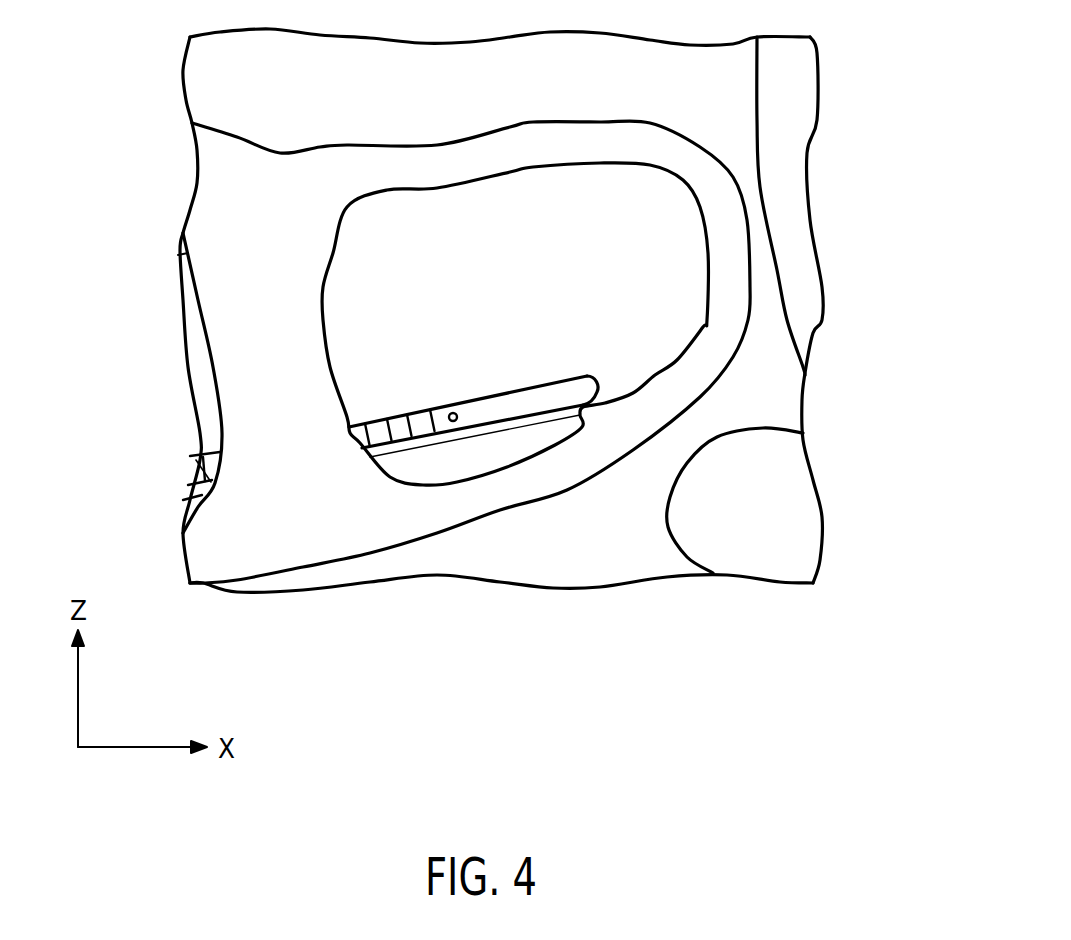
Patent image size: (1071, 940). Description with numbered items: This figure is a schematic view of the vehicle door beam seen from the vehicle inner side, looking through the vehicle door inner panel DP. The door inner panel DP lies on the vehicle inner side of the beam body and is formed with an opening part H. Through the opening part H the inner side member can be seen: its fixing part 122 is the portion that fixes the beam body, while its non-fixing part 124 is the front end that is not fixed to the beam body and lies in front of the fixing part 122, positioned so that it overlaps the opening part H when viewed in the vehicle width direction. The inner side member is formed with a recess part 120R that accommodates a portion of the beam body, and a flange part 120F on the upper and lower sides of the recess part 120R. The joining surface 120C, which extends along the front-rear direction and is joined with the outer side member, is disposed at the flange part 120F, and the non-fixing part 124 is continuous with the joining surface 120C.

The opening part H is at (650, 227).
The fixing part 122 is at (382, 437).
The non-fixing part 124 is at (573, 390).
The recess part 120R is at (482, 457).
The vehicle door inner panel DP is at (687, 440).
The flange part 120F is at (215, 455).
The joining surface 120C is at (193, 475).